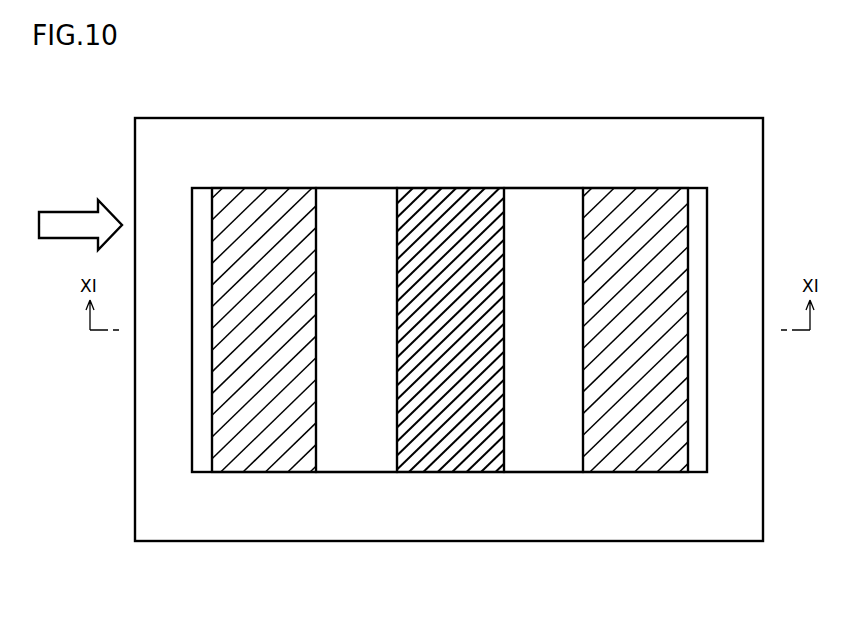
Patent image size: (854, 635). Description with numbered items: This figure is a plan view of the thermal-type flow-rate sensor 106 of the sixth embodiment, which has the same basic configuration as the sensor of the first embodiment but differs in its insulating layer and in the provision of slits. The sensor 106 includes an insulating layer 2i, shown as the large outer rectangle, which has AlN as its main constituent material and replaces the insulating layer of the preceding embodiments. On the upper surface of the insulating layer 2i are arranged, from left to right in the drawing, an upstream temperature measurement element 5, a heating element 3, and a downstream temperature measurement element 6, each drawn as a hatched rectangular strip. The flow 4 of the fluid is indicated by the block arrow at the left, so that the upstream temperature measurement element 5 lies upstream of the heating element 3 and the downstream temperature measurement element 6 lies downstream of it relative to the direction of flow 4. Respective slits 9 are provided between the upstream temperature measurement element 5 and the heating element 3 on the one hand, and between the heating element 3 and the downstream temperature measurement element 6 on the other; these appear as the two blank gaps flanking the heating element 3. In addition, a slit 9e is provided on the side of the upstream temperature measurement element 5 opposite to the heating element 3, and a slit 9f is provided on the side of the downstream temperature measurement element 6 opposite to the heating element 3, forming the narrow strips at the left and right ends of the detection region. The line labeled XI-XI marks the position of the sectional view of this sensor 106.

The thermal-type flow-rate sensor 106 is at (779, 101).
The insulating layer 2i is at (699, 134).
The slit 9e is at (203, 455).
The slit 9f is at (698, 457).
The upstream temperature measurement element 5 is at (263, 203).
The heating element 3 is at (452, 200).
The downstream temperature measurement element 6 is at (637, 203).
The slit 9 is at (358, 453).
The flow 4 is at (72, 210).